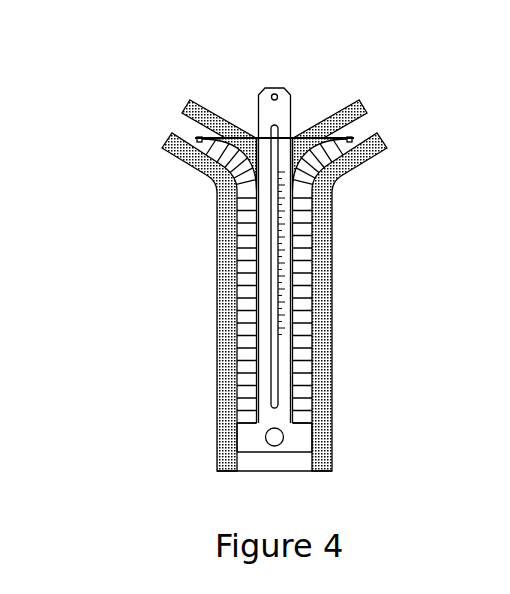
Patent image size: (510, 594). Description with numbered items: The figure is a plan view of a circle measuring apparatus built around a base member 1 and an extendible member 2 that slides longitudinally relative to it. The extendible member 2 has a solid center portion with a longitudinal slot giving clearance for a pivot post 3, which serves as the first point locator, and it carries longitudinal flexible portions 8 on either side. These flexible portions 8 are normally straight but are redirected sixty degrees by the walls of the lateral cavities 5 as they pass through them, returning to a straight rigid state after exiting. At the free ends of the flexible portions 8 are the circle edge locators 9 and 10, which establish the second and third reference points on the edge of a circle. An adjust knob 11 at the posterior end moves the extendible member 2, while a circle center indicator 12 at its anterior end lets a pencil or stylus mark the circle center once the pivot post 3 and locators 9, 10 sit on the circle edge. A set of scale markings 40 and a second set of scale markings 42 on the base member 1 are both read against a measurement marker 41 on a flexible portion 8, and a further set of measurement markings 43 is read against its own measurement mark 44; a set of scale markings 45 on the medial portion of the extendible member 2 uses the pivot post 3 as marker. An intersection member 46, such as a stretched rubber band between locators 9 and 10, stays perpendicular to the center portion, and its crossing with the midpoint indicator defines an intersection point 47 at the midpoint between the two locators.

The base member 1 is at (335, 320).
The extendible member 2 is at (313, 357).
The pivot post 3 is at (281, 183).
The lateral cavities 5 is at (162, 123).
The flexible portions 8 is at (226, 186).
The circle edge locator 9 is at (357, 137).
The circle edge locator 10 is at (192, 137).
The adjust knob 11 is at (285, 436).
The circle center indicator 12 is at (285, 96).
The set of scale markings 40 is at (227, 443).
The measurement marker 41 is at (241, 444).
The set of scale markings 42 is at (218, 357).
The set of measurement markings 43 is at (329, 282).
The measurement mark 44 is at (308, 444).
The set of scale markings 45 is at (286, 219).
The intersection member 46 is at (231, 128).
The intersection point 47 is at (263, 127).